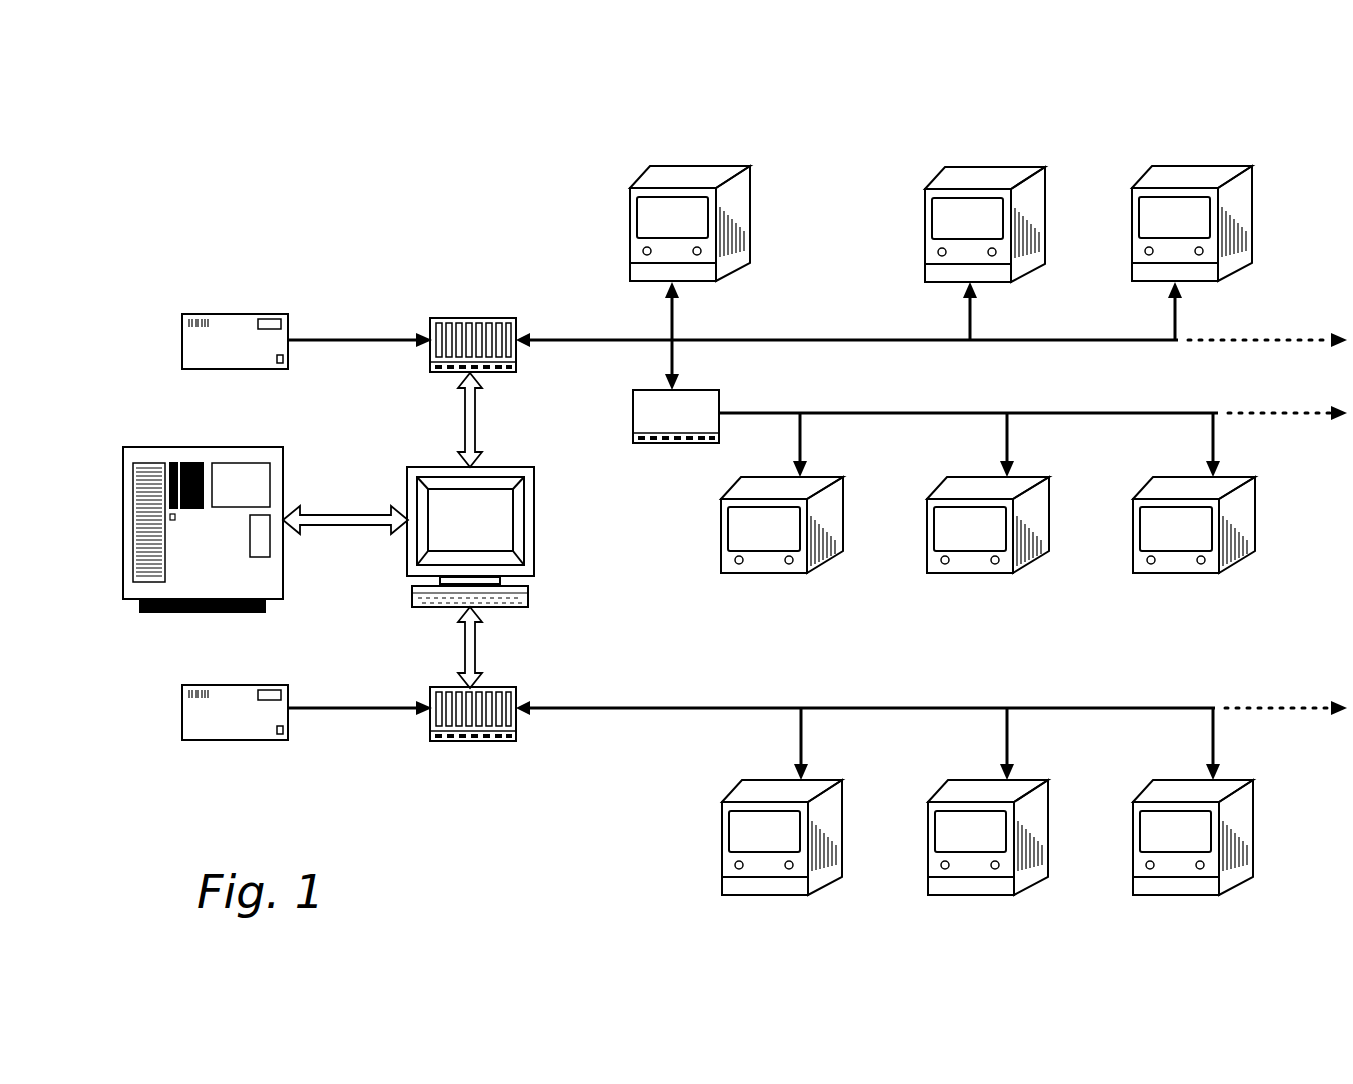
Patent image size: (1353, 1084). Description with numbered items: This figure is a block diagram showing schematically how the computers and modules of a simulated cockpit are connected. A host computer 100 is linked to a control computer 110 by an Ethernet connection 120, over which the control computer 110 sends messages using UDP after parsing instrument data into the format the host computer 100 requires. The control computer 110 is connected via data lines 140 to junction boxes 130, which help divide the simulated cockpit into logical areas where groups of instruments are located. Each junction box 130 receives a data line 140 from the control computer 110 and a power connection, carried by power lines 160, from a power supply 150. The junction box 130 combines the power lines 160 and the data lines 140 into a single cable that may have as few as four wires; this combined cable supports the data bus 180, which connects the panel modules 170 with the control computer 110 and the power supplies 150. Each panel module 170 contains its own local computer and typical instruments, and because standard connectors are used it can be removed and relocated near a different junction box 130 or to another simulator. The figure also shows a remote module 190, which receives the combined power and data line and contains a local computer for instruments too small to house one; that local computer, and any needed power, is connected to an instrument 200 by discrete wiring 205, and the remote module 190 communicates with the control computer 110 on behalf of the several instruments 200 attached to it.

The host computer 100 is at (205, 447).
The control computer 110 is at (535, 517).
The Ethernet connection 120 is at (335, 513).
The junction box 130 is at (487, 318).
The data line 140 is at (462, 420).
The power supply 150 is at (234, 314).
The power line 160 is at (355, 340).
The panel module 170 is at (708, 166).
The data bus 180 is at (610, 336).
The remote module 190 is at (633, 416).
The instrument 200 is at (758, 575).
The discrete wiring 205 is at (908, 413).